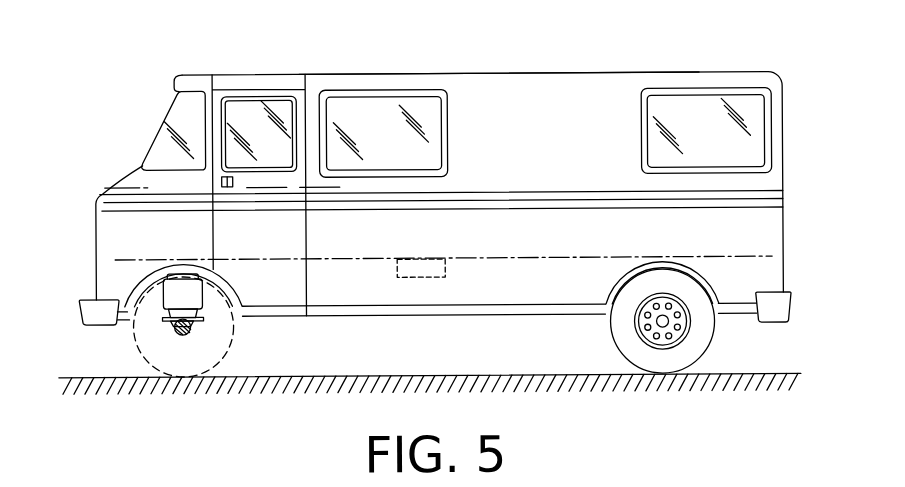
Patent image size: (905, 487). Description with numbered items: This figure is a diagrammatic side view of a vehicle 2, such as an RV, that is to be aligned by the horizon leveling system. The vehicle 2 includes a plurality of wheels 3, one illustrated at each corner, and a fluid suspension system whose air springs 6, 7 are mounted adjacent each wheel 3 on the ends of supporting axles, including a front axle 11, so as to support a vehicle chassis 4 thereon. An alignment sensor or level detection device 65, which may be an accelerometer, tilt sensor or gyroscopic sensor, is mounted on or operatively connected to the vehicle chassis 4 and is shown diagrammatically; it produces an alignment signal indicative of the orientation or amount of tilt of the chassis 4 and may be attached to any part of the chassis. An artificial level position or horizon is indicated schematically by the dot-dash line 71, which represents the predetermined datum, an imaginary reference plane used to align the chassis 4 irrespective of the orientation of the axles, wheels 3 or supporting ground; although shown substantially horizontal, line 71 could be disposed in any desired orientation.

The vehicle 2 is at (143, 92).
The wheels 3 is at (212, 340).
The vehicle chassis 4 is at (505, 82).
The air spring 6 is at (662, 111).
The air spring 7 is at (117, 252).
The front axle 11 is at (176, 334).
The alignment sensor or level detection device 65 is at (422, 266).
The dot-dash line indicating artificial horizon 71 is at (543, 257).